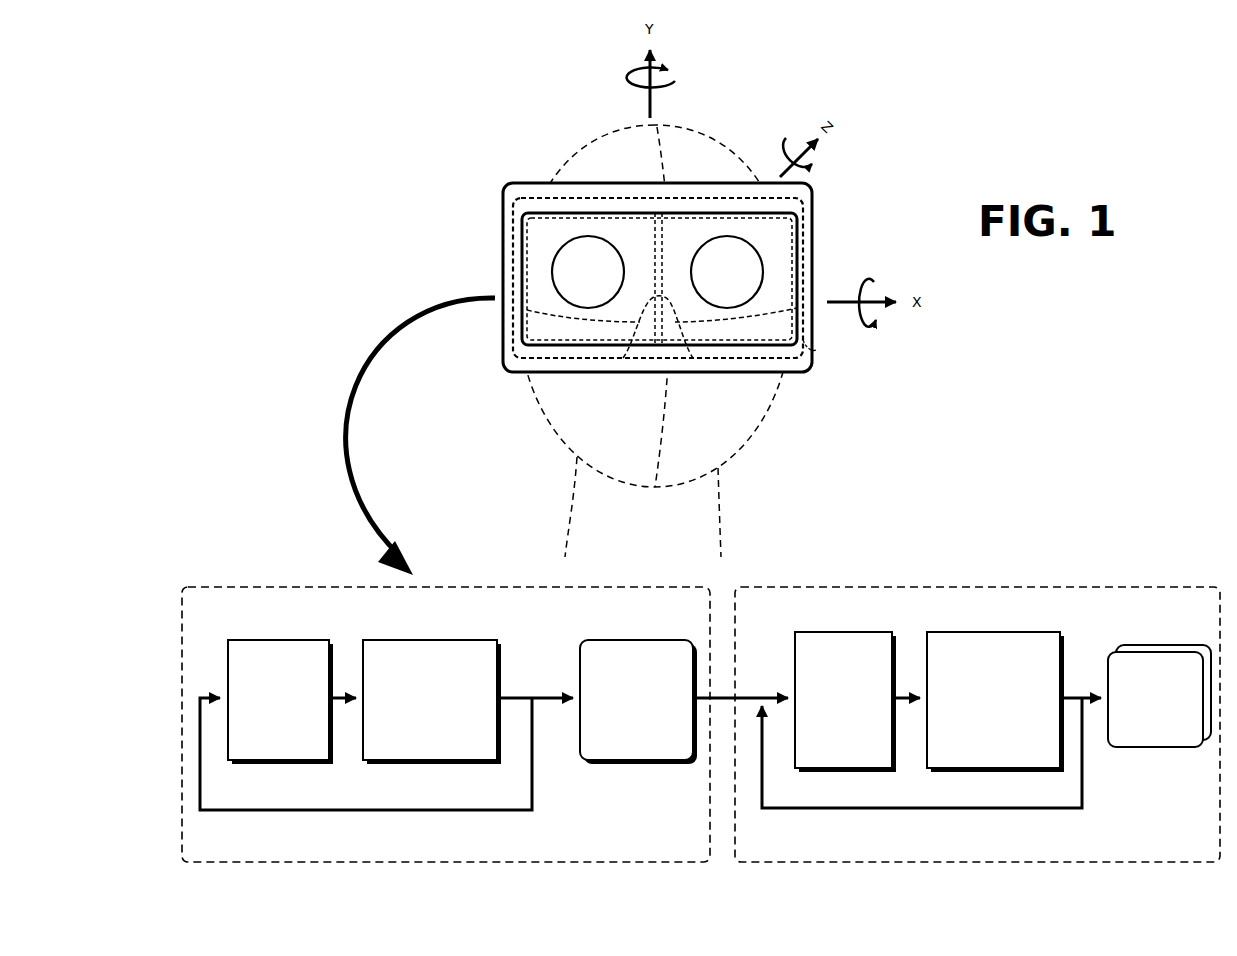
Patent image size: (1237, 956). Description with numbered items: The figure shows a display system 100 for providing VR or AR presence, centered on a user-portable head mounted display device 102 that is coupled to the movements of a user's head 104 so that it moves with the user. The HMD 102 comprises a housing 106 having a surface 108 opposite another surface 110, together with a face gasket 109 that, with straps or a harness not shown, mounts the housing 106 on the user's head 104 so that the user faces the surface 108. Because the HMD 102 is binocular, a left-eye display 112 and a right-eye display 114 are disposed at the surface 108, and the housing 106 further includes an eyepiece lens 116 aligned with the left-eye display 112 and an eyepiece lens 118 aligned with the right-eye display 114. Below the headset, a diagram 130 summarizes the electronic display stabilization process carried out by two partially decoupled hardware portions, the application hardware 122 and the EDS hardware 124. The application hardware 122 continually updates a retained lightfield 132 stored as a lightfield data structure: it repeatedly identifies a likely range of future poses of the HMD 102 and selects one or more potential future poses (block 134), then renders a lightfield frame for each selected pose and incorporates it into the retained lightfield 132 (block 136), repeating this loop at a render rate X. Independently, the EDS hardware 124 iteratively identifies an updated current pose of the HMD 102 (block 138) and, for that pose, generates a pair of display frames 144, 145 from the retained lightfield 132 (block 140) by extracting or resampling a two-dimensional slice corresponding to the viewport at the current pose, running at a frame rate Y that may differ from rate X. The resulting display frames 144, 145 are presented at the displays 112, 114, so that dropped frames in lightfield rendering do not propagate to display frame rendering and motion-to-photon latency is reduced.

The display system 100 is at (757, 90).
The head mounted display device 102 is at (530, 183).
The user's head 104 is at (542, 448).
The housing 106 is at (812, 218).
The surface 108 is at (712, 364).
The face gasket 109 is at (613, 358).
The surface 110 is at (818, 342).
The left-eye display 112 is at (560, 241).
The right-eye display 114 is at (703, 241).
The eyepiece lens 116 is at (618, 256).
The eyepiece lens 118 is at (757, 256).
The application hardware 122 is at (568, 853).
The EDS hardware 124 is at (1083, 853).
The diagram 130 is at (300, 560).
The retained lightfield 132 is at (624, 725).
The block 134 is at (284, 640).
The block 136 is at (432, 640).
The block 138 is at (846, 632).
The block 140 is at (995, 632).
The display frame 144 is at (1138, 652).
The display frame 145 is at (1168, 645).